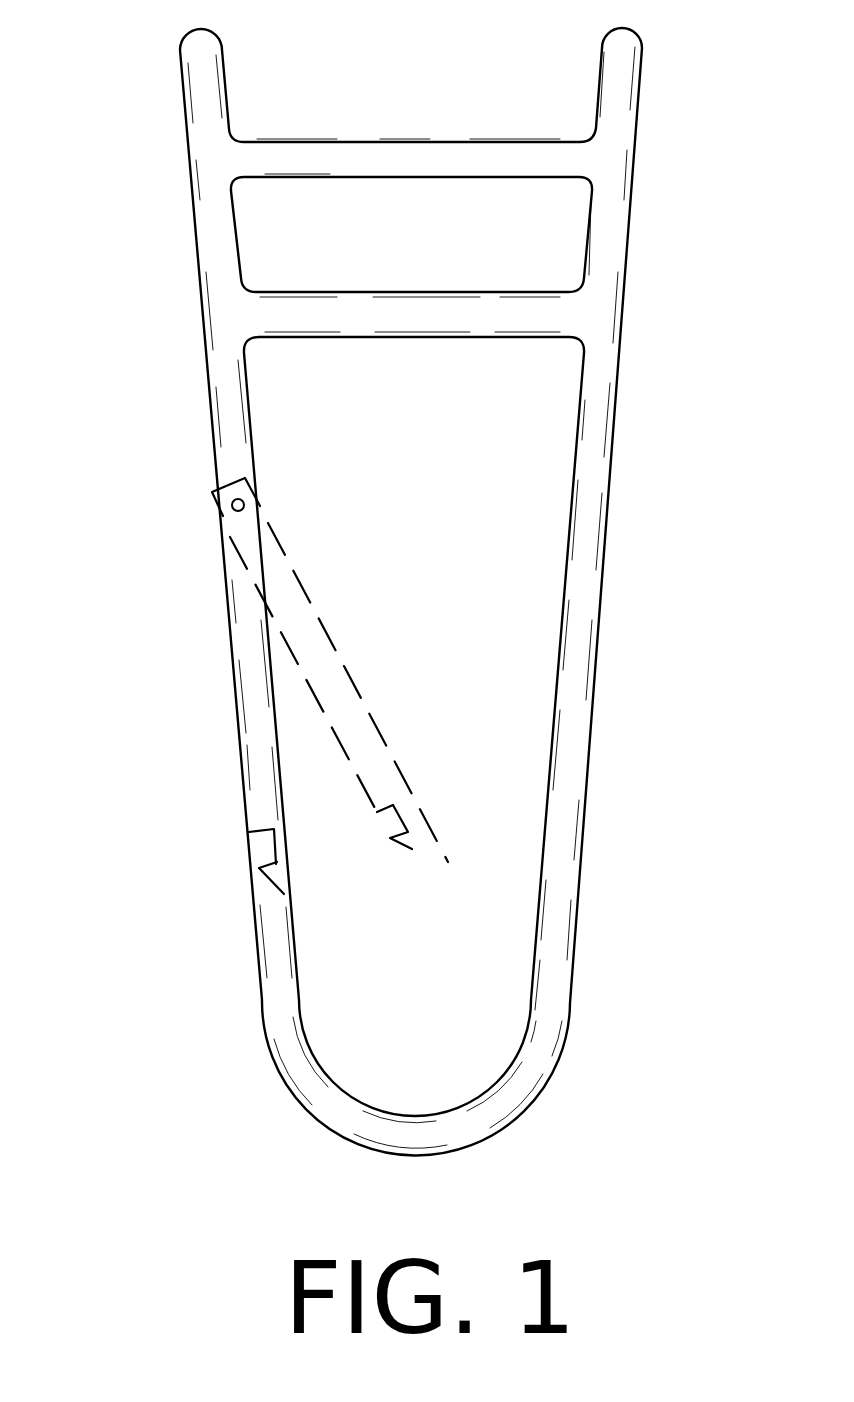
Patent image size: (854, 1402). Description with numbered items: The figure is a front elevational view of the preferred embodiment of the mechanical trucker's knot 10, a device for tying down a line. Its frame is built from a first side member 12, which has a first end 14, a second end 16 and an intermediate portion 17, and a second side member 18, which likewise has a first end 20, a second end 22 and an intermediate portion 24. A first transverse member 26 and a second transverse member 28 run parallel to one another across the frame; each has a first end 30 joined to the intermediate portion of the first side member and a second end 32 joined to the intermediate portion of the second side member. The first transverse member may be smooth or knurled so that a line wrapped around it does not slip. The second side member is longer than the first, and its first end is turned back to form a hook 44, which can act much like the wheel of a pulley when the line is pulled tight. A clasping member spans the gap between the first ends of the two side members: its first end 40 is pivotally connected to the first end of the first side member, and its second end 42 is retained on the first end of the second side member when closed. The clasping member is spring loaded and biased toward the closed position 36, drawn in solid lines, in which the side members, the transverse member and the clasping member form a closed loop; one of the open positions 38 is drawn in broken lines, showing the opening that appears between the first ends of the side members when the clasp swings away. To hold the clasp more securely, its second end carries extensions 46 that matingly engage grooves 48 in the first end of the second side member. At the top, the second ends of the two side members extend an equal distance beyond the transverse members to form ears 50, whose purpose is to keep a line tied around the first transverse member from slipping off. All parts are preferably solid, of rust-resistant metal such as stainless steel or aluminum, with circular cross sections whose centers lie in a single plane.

The mechanical trucker's knot 10 is at (593, 705).
The first side member 12 is at (207, 362).
The first end of the first side member 14 is at (247, 815).
The second end of the first side member 16 is at (186, 34).
The intermediate portion of the first side member 17 is at (198, 245).
The second side member 18 is at (607, 493).
The first end of the second side member 20 is at (260, 962).
The second end of the second side member 22 is at (633, 27).
The intermediate portion of the second side member 24 is at (625, 255).
The first transverse member 26 is at (420, 143).
The second transverse member 28 is at (403, 336).
The first end of the transverse member 30 is at (258, 180).
The second end of the transverse member 32 is at (561, 178).
The closed position 36 is at (237, 689).
The open position 38 is at (345, 667).
The first end of the clasping member 40 is at (213, 493).
The second end of the clasping member 42 is at (290, 872).
The hook 44 is at (333, 1133).
The extensions 46 is at (278, 884).
The grooves 48 is at (280, 870).
The ears 50 is at (225, 77).